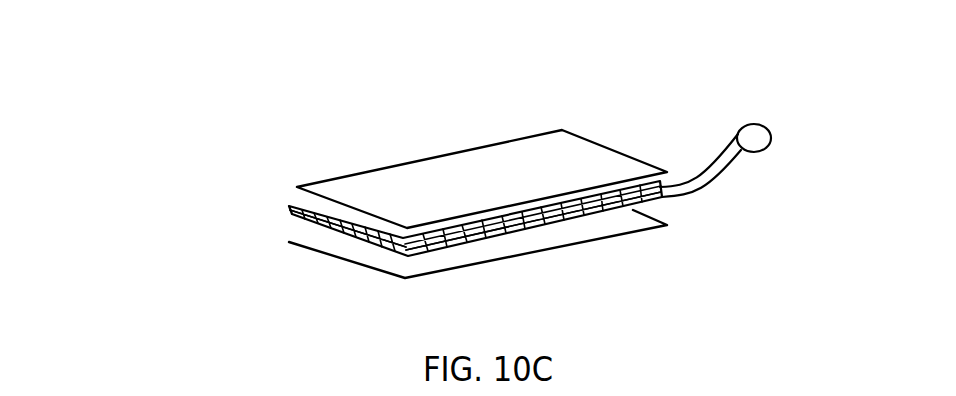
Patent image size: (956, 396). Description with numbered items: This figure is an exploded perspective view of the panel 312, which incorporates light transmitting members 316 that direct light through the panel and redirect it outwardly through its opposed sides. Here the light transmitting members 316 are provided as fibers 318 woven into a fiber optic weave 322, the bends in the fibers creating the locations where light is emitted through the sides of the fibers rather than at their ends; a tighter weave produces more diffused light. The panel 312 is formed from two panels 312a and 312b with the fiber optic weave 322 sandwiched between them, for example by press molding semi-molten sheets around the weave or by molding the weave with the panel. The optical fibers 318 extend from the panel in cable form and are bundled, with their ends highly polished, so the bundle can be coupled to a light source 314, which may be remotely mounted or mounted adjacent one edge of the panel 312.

The panel 312 is at (451, 191).
The panel 312a is at (488, 166).
The panel 312b is at (575, 237).
The light source 314 is at (769, 122).
The light transmitting member 316 is at (291, 217).
The fiber 318 is at (480, 245).
The fiber optic weave 322 is at (387, 253).